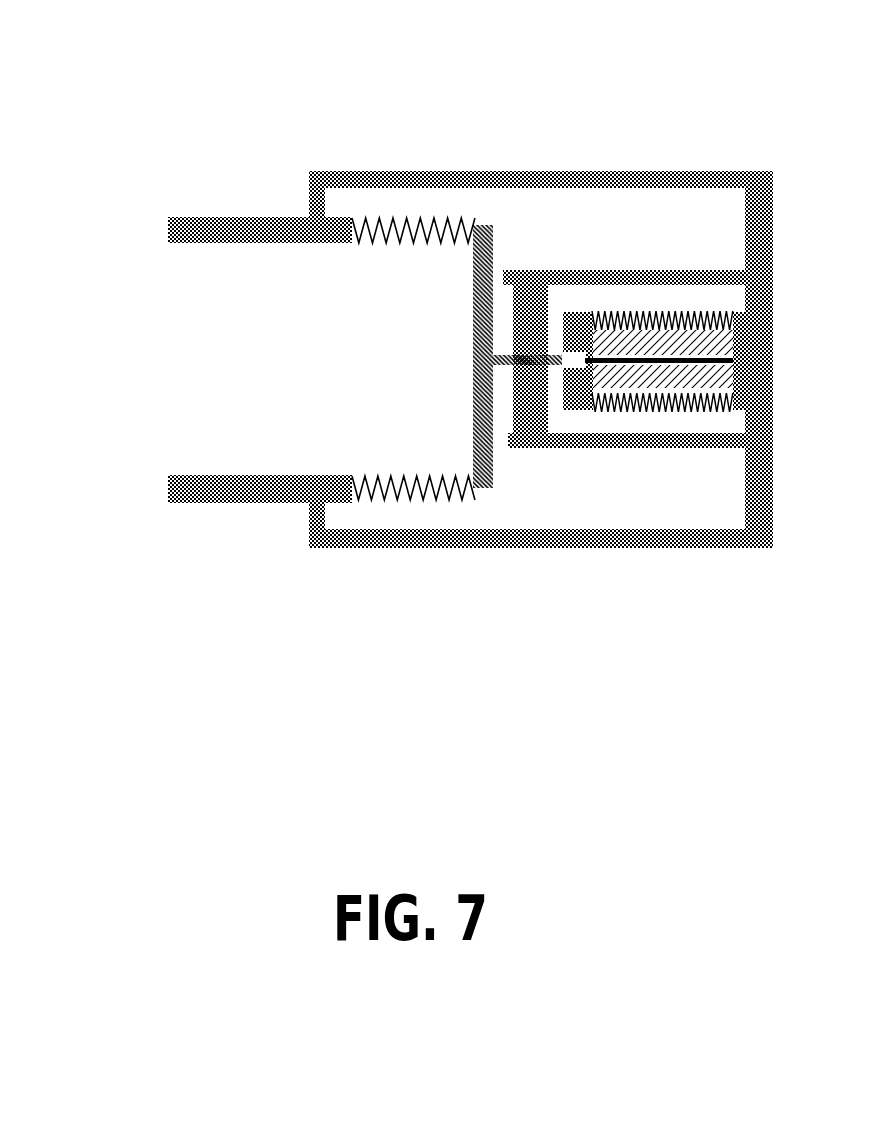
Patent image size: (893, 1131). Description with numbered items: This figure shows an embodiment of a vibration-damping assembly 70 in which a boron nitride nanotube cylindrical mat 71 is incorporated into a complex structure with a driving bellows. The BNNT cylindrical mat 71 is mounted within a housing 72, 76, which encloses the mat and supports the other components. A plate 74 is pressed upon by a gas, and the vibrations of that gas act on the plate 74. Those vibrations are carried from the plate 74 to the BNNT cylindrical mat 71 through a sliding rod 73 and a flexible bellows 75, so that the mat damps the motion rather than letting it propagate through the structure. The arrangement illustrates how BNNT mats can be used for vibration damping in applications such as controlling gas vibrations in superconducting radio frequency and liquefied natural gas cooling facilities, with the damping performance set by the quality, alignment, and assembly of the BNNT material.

The actuator assembly 70 is at (310, 78).
The BNNT cylindrical mat 71 is at (663, 387).
The housing 72 is at (718, 442).
The sliding rod 73 is at (507, 363).
The plate 74 is at (473, 355).
The flexible bellows 75 is at (372, 497).
The housing 76 is at (203, 497).